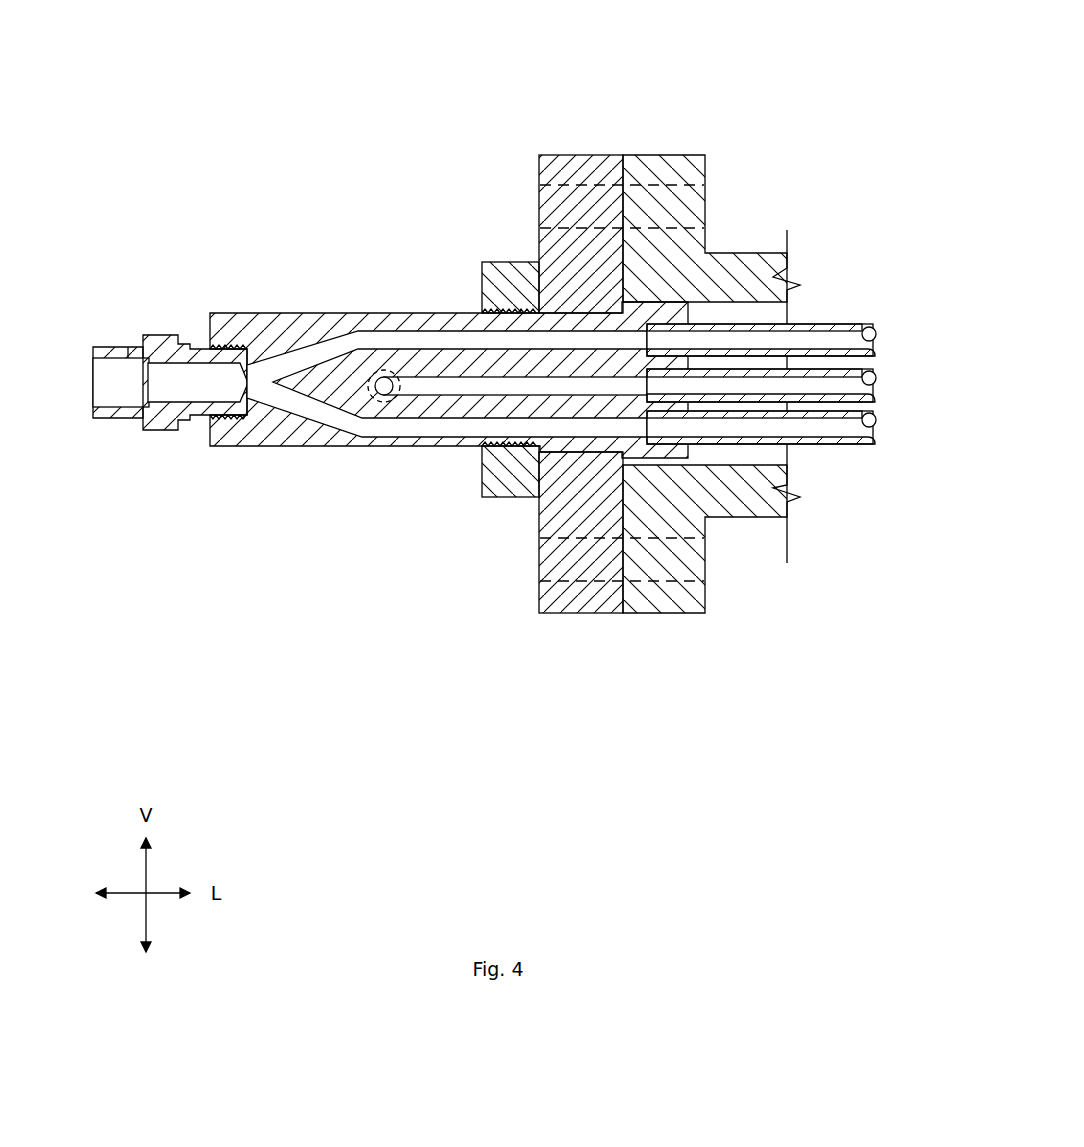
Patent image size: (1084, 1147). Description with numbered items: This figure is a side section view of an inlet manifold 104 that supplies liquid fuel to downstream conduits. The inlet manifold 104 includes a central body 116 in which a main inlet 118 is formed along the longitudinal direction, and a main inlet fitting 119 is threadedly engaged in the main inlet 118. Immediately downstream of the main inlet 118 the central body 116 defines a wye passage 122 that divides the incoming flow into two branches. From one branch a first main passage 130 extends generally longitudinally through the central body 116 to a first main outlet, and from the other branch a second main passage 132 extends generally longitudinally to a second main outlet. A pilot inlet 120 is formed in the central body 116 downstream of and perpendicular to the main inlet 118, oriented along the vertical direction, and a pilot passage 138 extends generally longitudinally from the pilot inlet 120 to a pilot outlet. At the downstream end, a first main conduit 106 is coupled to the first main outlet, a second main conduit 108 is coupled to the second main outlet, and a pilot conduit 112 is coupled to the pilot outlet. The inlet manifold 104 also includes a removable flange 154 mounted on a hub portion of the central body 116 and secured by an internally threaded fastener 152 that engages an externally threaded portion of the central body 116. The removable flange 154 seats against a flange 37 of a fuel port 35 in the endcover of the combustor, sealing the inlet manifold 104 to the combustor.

The inlet manifold 104 is at (432, 80).
The removable flange 154 is at (580, 165).
The flange 37 is at (668, 175).
The fuel port 35 is at (748, 253).
The second main passage 132 is at (515, 338).
The pilot passage 138 is at (507, 388).
The central body 116 is at (433, 362).
The pilot inlet 120 is at (378, 374).
The main inlet fitting 119 is at (110, 353).
The main inlet 118 is at (220, 418).
The wye passage 122 is at (310, 431).
The first main passage 130 is at (478, 427).
The internally threaded fastener 152 is at (491, 490).
The second main conduit 108 is at (843, 342).
The pilot conduit 112 is at (857, 390).
The first main conduit 106 is at (837, 428).